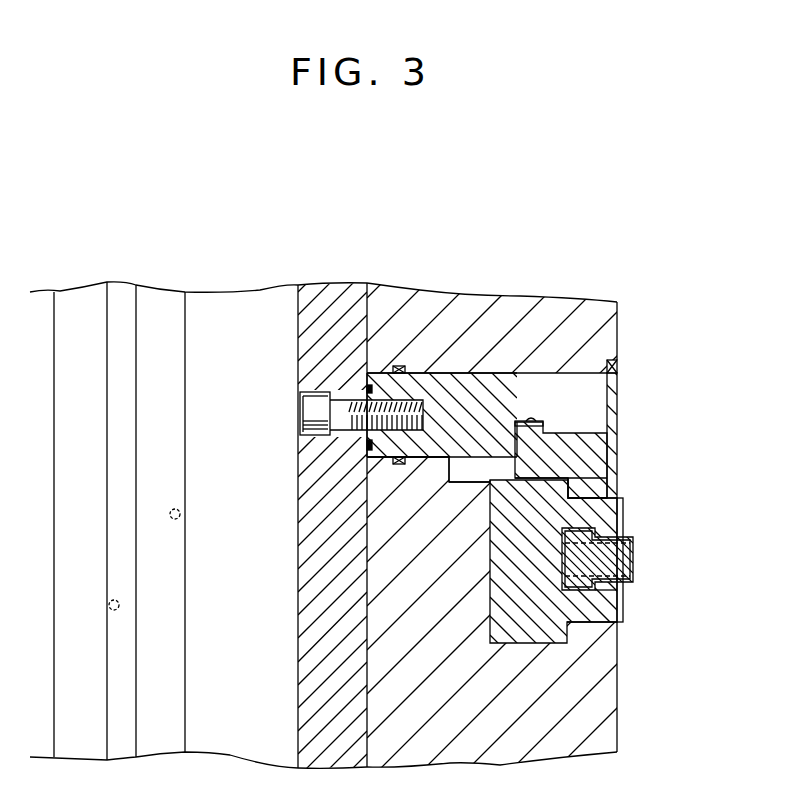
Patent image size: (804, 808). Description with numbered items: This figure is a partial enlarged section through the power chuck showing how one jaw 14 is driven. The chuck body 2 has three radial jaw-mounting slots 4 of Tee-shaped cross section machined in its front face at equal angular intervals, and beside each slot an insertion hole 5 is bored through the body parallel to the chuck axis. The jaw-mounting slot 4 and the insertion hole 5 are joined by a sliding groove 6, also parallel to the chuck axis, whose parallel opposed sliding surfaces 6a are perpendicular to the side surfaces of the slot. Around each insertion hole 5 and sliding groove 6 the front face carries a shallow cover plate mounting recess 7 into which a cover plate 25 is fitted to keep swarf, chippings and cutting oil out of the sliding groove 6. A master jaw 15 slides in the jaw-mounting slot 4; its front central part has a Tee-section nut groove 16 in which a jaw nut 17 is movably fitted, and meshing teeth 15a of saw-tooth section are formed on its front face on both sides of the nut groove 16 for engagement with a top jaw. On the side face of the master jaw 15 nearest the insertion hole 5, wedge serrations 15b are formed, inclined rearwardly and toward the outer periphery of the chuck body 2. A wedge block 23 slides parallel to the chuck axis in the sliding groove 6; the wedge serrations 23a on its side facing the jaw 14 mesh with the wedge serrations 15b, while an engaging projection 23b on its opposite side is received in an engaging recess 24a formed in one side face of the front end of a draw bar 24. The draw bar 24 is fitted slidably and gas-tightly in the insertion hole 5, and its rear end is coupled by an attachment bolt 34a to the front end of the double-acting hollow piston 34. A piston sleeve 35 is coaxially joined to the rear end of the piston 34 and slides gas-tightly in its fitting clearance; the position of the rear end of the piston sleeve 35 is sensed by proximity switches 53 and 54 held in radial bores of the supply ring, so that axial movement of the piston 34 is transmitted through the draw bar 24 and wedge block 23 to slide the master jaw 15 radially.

The chuck body 2 is at (407, 300).
The jaw-mounting slot 4 is at (495, 627).
The insertion hole 5 is at (493, 376).
The sliding groove 6 is at (447, 477).
The sliding surfaces 6a is at (488, 481).
The cover plate mounting recess 7 is at (604, 362).
The jaw 14 is at (628, 505).
The master jaw 15 is at (621, 618).
The meshing teeth 15a is at (622, 597).
The wedge serrations 15b is at (576, 456).
The nut groove 16 is at (586, 586).
The jaw nut 17 is at (634, 553).
The wedge block 23 is at (566, 441).
The wedge serrations 23a is at (591, 491).
The engaging projection 23b is at (516, 446).
The draw bar 24 is at (433, 381).
The engaging recess 24a is at (535, 420).
The cover plate 25 is at (611, 367).
The hollow piston 34 is at (340, 298).
The attachment bolt 34a is at (343, 421).
The piston sleeve 35 is at (245, 294).
The proximity switch 53 is at (182, 515).
The proximity switch 54 is at (121, 607).